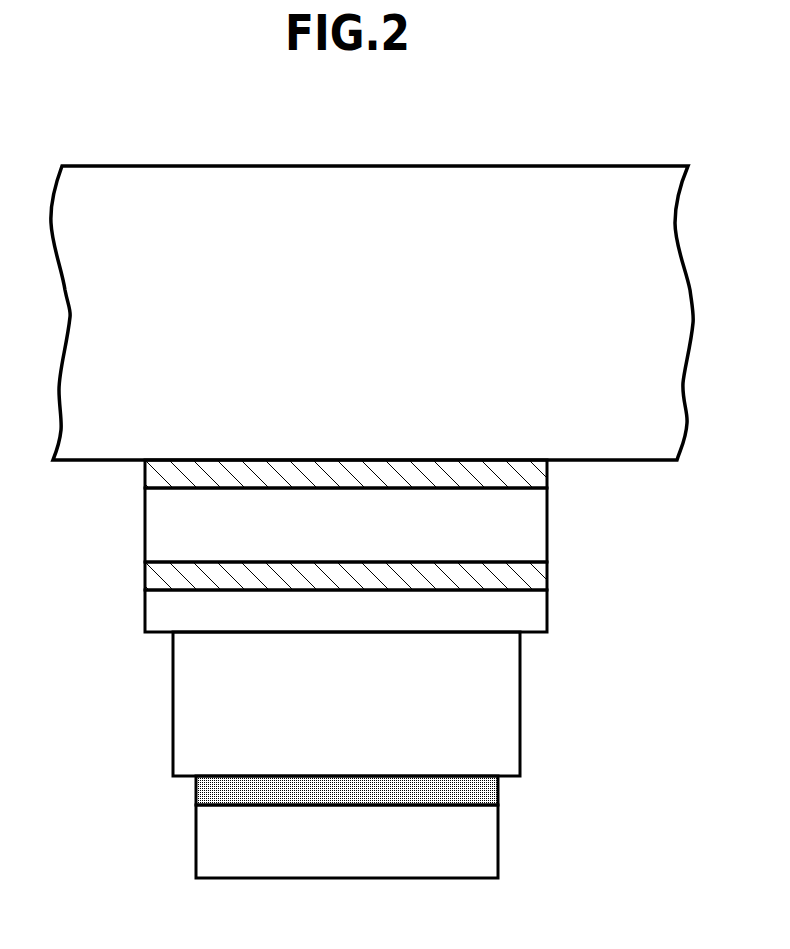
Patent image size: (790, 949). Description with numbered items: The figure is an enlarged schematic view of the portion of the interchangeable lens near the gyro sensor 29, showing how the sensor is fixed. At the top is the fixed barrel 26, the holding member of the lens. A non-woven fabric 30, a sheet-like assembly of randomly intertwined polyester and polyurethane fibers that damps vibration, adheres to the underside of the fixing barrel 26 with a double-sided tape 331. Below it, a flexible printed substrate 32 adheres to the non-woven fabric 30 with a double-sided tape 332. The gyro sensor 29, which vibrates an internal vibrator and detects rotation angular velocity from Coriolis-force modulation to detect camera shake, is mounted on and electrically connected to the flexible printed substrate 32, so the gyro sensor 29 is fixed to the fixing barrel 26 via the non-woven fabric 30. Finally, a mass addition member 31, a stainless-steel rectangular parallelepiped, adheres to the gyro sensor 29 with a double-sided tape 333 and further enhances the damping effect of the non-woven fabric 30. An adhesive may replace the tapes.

The fixed barrel 26 is at (545, 164).
The double-sided tape 331 is at (145, 470).
The non-woven fabric 30 is at (548, 525).
The double-sided tape 332 is at (145, 573).
The flexible printed substrate 32 is at (548, 612).
The gyro sensor 29 is at (521, 700).
The double-sided tape 333 is at (196, 792).
The mass addition member 31 is at (499, 848).